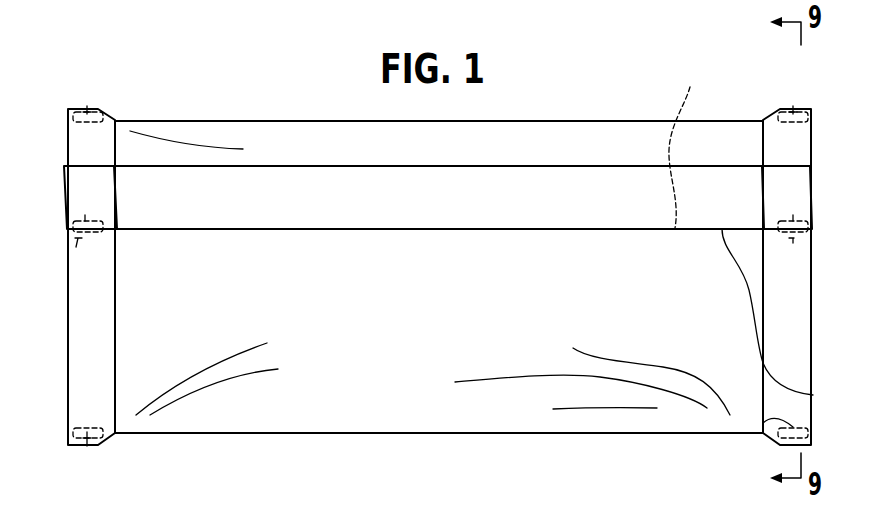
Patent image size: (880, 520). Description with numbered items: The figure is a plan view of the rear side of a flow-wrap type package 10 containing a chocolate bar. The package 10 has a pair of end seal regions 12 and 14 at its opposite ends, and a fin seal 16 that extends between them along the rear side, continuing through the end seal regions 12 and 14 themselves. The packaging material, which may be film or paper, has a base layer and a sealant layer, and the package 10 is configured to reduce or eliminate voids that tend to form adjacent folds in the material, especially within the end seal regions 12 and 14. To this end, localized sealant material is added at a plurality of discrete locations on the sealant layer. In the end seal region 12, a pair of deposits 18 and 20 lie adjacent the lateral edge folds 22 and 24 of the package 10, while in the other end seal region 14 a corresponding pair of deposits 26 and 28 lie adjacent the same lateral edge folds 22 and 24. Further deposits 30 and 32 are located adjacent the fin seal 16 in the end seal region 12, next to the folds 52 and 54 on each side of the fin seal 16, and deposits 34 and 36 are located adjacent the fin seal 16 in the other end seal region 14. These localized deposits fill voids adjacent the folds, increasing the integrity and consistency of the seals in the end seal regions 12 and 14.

The flow-wrap type package 10 is at (725, 78).
The end seal region 12 is at (86, 288).
The end seal region 14 is at (795, 337).
The fin seal 16 is at (582, 193).
The deposit of localized heat sealant material 18 is at (87, 100).
The deposit of localized heat sealant material 20 is at (88, 450).
The lateral edge fold 22 is at (207, 121).
The lateral edge fold 24 is at (224, 437).
The deposit of localized heat sealant material 26 is at (792, 100).
The deposit of localized heat sealant material 28 is at (763, 430).
The deposit of localized heat sealant material 30 is at (80, 222).
The deposit of localized heat sealant material 32 is at (70, 248).
The deposit of localized heat sealant material 34 is at (793, 222).
The deposit of localized heat sealant material 36 is at (797, 242).
The fold 52 is at (687, 146).
The fold 54 is at (813, 395).